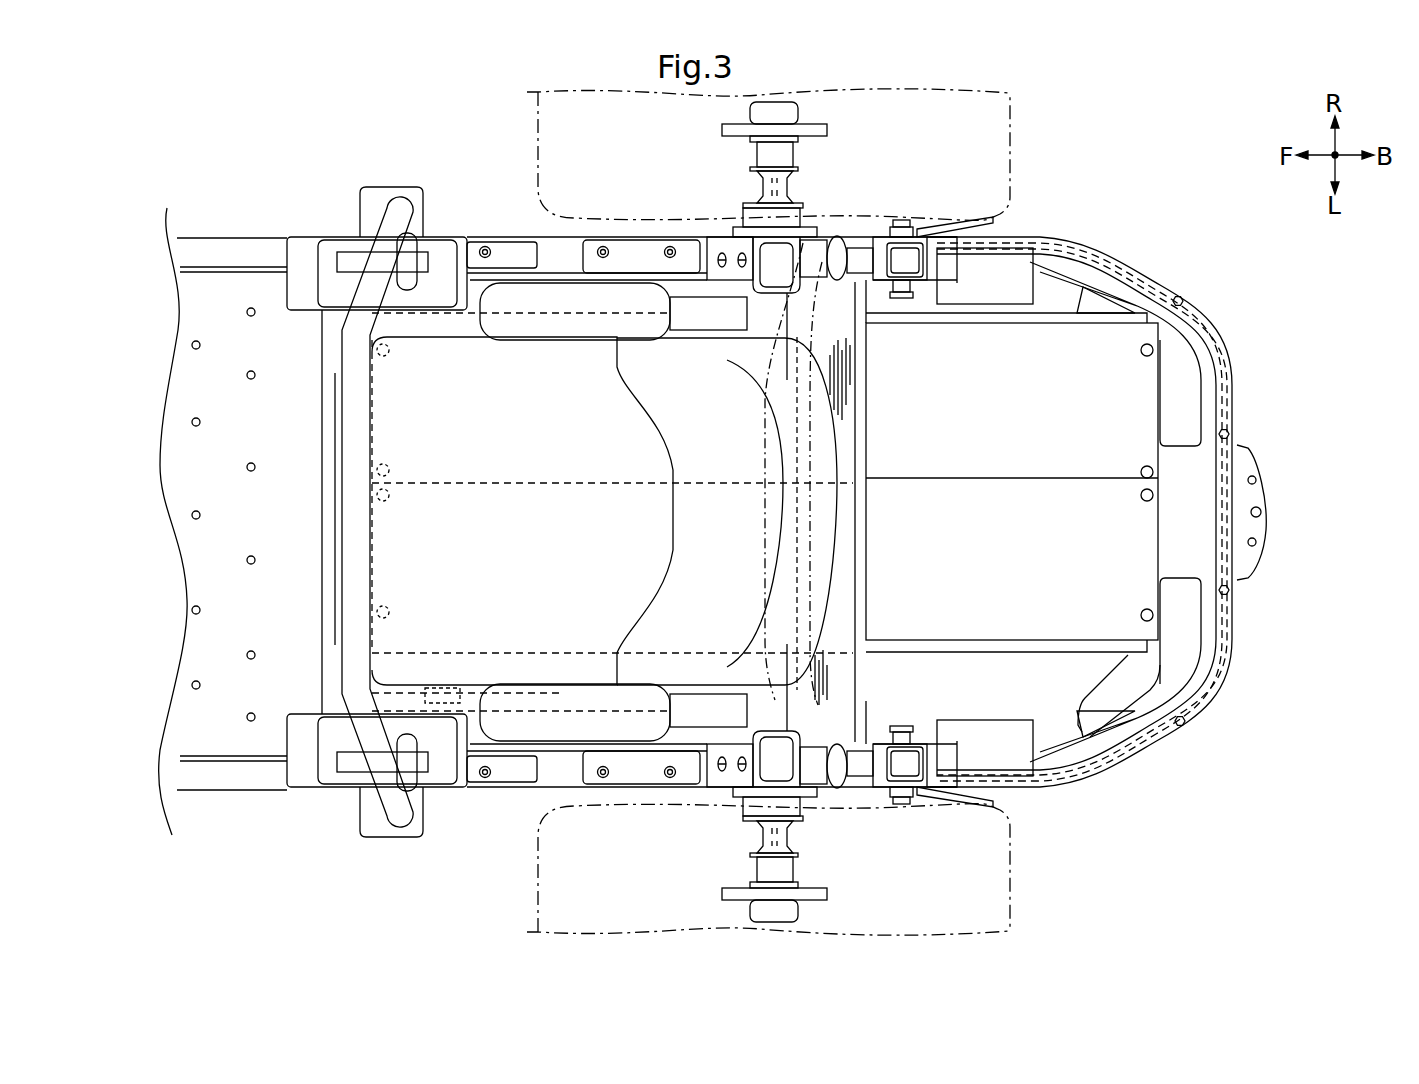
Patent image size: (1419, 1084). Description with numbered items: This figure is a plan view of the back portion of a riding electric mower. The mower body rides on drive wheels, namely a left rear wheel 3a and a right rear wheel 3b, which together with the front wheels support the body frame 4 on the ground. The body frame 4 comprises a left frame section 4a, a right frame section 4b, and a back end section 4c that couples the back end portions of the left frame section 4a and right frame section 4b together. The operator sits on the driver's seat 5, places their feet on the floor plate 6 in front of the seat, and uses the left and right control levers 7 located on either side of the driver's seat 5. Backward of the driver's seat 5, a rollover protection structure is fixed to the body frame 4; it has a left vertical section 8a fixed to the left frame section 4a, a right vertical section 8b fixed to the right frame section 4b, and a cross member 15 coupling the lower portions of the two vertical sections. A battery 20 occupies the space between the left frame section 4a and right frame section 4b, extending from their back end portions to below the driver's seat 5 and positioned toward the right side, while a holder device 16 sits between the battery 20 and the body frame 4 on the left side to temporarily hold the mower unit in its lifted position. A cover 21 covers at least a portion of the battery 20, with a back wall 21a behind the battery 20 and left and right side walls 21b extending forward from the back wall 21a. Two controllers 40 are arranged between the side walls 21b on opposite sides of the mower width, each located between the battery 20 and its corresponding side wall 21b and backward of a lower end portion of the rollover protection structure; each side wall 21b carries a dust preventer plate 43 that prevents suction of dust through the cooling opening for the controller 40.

The left rear wheel 3a is at (538, 908).
The right rear wheel 3b is at (538, 118).
The body frame 4 is at (545, 796).
The left frame section 4a is at (703, 777).
The right frame section 4b is at (703, 247).
The back end section 4c is at (1200, 601).
The driver's seat 5 is at (397, 433).
The floor plate 6 is at (218, 622).
The control lever 7 is at (365, 300).
The left vertical section 8a is at (780, 724).
The right vertical section 8b is at (780, 300).
The cross member 15 is at (845, 448).
The holder device 16 is at (559, 718).
The battery 20 is at (1115, 428).
The cover 21 is at (1232, 341).
The back wall 21a is at (1215, 400).
The side wall 21b is at (1045, 243).
The controller 40 is at (993, 290).
The dust preventer plate 43 is at (955, 229).